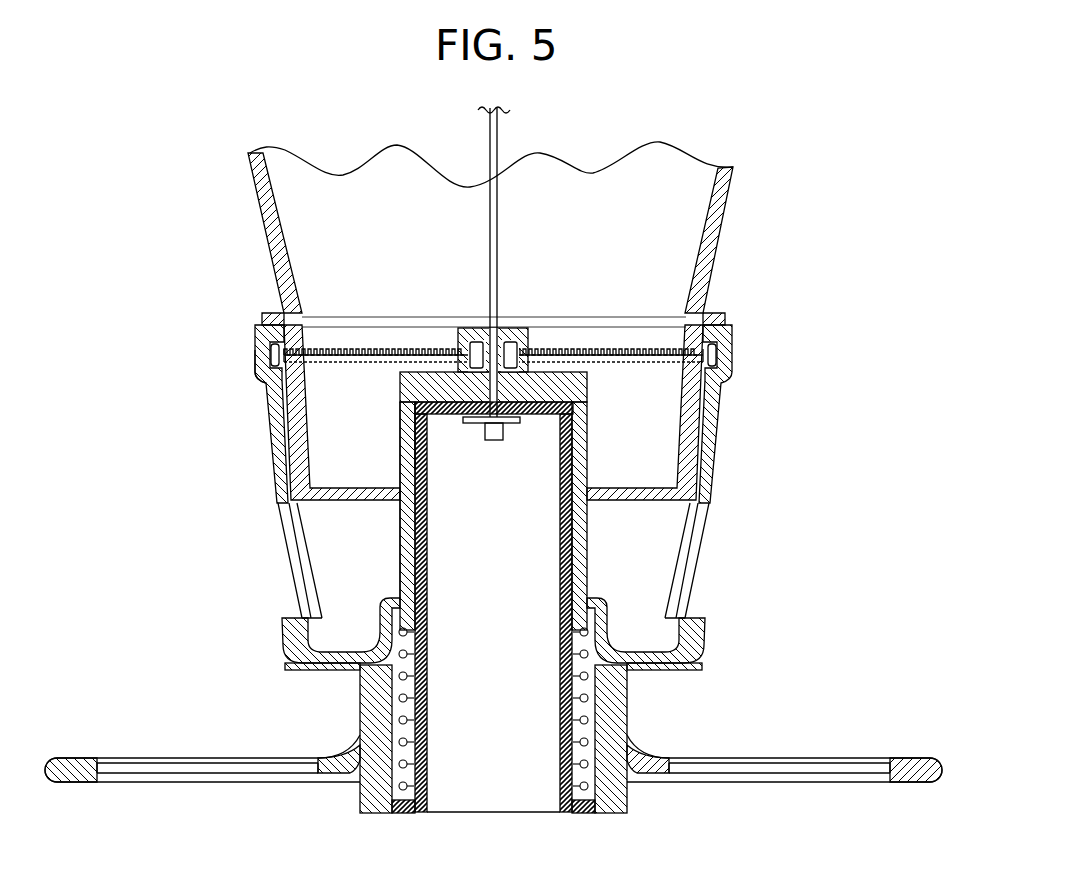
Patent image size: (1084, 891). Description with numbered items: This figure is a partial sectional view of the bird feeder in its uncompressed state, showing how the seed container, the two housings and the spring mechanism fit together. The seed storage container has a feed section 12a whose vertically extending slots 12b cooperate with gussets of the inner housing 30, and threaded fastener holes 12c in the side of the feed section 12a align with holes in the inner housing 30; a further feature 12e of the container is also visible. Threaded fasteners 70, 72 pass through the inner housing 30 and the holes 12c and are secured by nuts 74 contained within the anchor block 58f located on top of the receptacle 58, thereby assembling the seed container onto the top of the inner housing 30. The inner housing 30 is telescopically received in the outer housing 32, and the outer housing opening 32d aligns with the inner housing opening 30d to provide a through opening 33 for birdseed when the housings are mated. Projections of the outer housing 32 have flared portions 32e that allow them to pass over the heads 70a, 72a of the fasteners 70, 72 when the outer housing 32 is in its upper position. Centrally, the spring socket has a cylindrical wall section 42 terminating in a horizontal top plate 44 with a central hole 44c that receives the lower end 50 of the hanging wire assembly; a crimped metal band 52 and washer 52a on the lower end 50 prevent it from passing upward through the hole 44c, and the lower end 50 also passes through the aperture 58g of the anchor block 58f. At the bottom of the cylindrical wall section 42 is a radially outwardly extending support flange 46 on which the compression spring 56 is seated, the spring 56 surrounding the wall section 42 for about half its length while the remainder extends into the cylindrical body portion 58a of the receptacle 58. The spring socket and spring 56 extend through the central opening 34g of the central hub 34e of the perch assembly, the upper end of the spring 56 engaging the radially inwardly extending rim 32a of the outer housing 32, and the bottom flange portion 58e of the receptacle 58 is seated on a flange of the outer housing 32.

The feed section 12a is at (328, 413).
The vertically extending slots 12b is at (665, 436).
The threaded fastener holes 12c is at (298, 346).
The cup upper wall and rim flange (right) 12e is at (675, 347).
The inner housing 30 is at (491, 494).
The inner housing opening 30d is at (688, 528).
The outer housing 32 is at (712, 455).
The radially inwardly extending rim 32a is at (592, 600).
The outer housing opening 32d is at (695, 565).
The flared portions 32e is at (263, 372).
The through opening 33 is at (304, 562).
The central hub 34e is at (615, 698).
The central opening 34g is at (625, 673).
The cylindrical wall section 42 is at (583, 527).
The horizontal top plate 44 is at (545, 414).
The central hole 44c is at (510, 424).
The support flange 46 is at (575, 815).
The lower end 50 is at (477, 380).
The crimped metal band 52 is at (482, 422).
The washer 52a is at (412, 440).
The compression spring 56 is at (622, 735).
The receptacle 58 is at (390, 536).
The cylindrical body portion 58a is at (406, 510).
The bottom flange portion 58e is at (290, 637).
The anchor block 58f is at (548, 345).
The aperture 58g is at (500, 345).
The threaded fastener 70 is at (393, 347).
The head 70a is at (273, 355).
The threaded fastener 72 is at (640, 347).
The head 72a is at (718, 357).
The nuts 74 is at (476, 343).